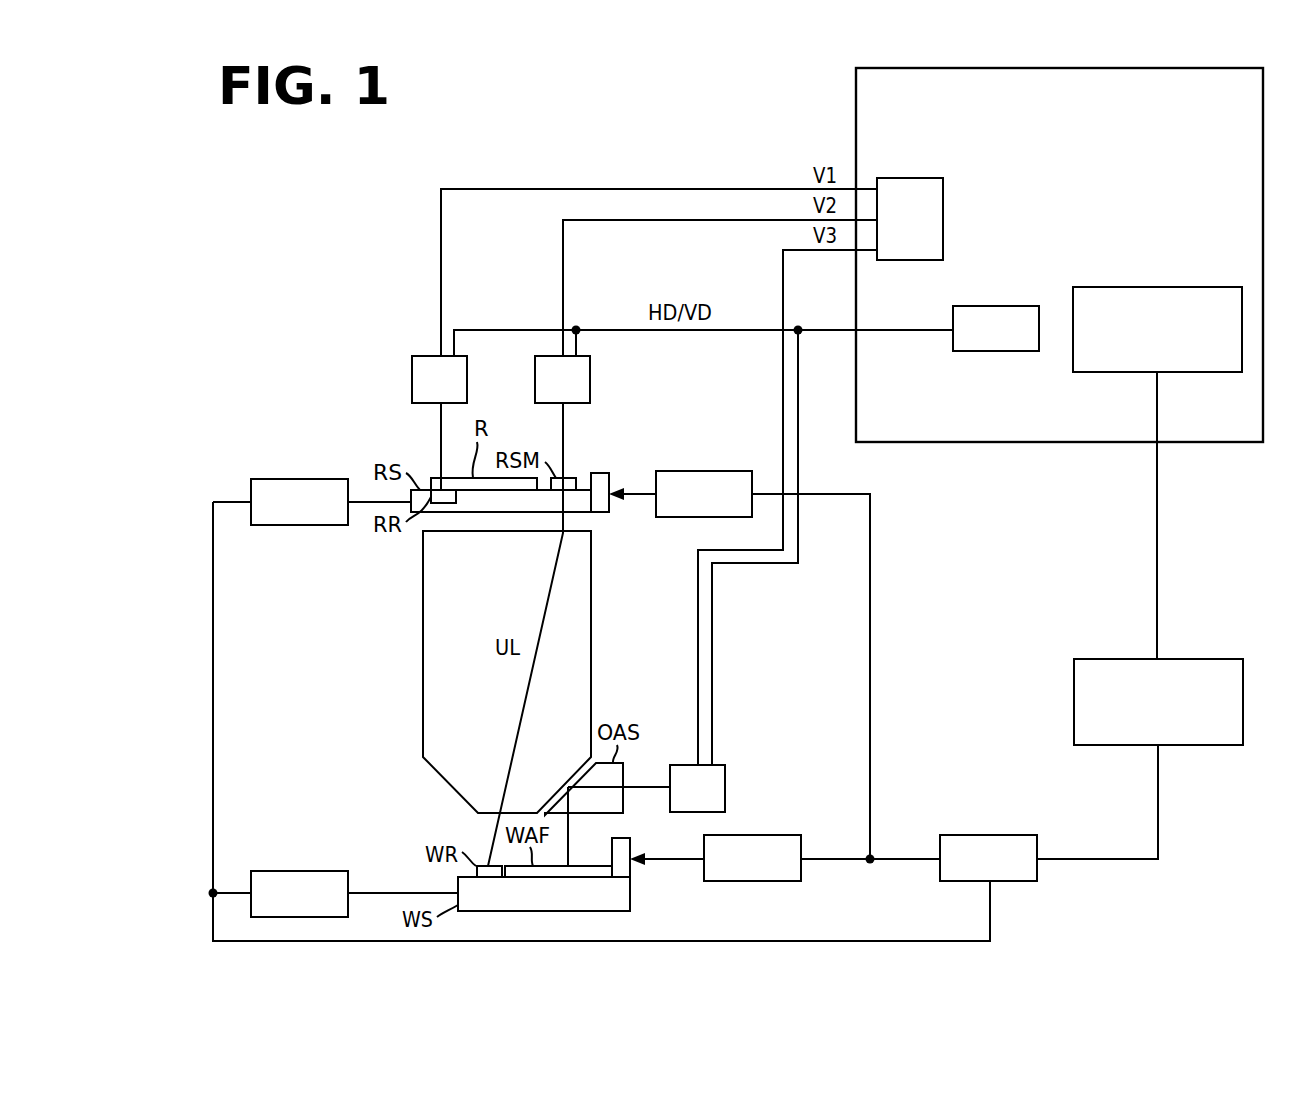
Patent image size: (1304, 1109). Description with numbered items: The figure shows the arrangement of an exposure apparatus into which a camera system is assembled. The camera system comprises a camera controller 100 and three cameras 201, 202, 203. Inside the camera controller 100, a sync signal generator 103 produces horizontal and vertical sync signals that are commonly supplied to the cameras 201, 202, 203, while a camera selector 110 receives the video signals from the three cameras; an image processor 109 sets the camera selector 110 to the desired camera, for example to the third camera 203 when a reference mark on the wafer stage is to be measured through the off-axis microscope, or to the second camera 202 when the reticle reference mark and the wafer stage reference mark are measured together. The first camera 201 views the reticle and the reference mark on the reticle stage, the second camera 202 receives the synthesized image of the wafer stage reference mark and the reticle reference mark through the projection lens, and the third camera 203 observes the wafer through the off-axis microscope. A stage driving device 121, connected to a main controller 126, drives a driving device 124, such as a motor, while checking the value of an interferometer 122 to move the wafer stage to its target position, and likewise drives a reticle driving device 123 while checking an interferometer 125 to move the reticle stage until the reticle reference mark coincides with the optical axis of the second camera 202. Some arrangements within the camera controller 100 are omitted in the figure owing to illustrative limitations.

The camera controller 100 is at (1018, 442).
The sync signal generator 103 is at (996, 351).
The image processor 109 is at (1160, 287).
The camera selector 110 is at (912, 178).
The stage driving device 121 is at (993, 835).
The interferometer 122 is at (747, 881).
The reticle driving device 123 is at (298, 479).
The driving device 124 is at (298, 871).
The interferometer 125 is at (710, 471).
The main controller 126 is at (1203, 659).
The camera 201 is at (412, 378).
The camera 202 is at (590, 378).
The camera 203 is at (727, 790).